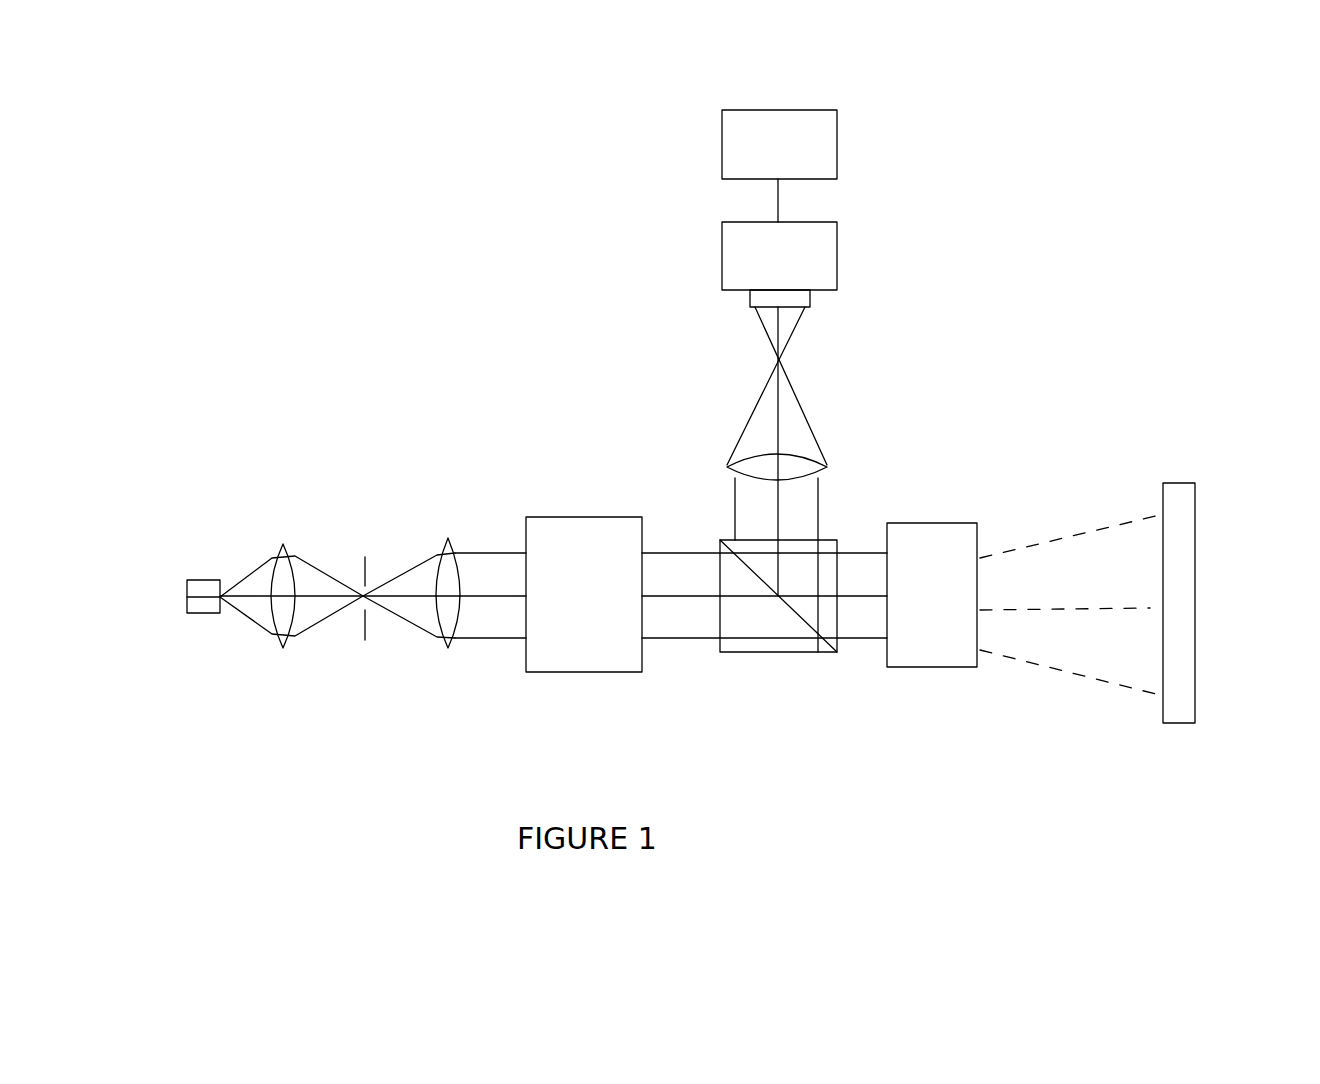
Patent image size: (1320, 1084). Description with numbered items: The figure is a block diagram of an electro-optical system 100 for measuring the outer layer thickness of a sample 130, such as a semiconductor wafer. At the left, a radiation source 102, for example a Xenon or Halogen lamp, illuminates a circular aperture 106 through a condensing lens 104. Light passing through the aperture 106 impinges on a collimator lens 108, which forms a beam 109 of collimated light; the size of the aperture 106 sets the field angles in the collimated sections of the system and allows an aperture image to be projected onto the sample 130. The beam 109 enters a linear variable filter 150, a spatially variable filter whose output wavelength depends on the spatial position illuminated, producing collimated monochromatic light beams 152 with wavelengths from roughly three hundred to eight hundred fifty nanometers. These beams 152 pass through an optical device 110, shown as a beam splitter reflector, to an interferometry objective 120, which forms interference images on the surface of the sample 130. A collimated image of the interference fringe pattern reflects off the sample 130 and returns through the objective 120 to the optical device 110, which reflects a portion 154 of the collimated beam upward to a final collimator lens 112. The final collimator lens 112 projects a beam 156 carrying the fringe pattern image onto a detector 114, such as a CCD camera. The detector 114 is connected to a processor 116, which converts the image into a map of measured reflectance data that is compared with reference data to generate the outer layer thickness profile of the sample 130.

The electro-optical system 100 is at (334, 309).
The radiation source 102 is at (192, 578).
The condensing lens 104 is at (284, 541).
The circular aperture 106 is at (370, 549).
The collimator lens 108 is at (455, 537).
The beam of collimated light 109 is at (482, 642).
The optical device 110 is at (783, 662).
The final collimator lens 112 is at (829, 460).
The detector 114 is at (840, 270).
The processor 116 is at (839, 158).
The interferometry objective 120 is at (930, 521).
The sample 130 is at (1184, 479).
The linear variable filter 150 is at (583, 515).
The collimated monochromatic light beams 152 is at (676, 643).
The reflected portion of collimated beam 154 is at (734, 506).
The beam comprising fringe pattern image 156 is at (797, 322).